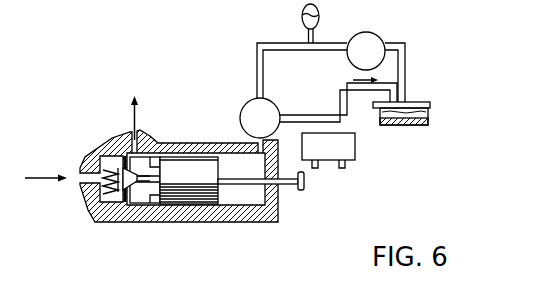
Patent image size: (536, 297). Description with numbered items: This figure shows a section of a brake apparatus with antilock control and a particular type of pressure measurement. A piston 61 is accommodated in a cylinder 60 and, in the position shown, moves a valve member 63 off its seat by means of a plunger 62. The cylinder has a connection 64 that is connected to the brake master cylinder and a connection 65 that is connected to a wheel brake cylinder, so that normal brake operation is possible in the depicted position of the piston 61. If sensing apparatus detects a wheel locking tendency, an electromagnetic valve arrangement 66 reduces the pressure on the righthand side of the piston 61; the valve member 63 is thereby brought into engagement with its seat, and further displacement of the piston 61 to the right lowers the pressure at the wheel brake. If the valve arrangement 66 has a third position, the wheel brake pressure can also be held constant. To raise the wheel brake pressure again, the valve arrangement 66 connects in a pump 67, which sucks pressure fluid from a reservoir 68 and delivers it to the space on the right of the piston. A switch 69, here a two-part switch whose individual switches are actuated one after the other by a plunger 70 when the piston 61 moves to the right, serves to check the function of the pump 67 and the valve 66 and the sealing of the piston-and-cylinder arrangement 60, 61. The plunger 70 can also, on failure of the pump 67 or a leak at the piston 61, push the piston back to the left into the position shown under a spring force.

The cylinder 60 is at (245, 195).
The piston 61 is at (198, 200).
The plunger 62 is at (144, 190).
The valve member 63 is at (115, 190).
The connection 64 is at (80, 175).
The connection 65 is at (132, 128).
The electromagnetic valve arrangement 66 is at (248, 101).
The pump 67 is at (379, 39).
The reservoir 68 is at (428, 114).
The switch 69 is at (355, 148).
The plunger 70 is at (290, 187).